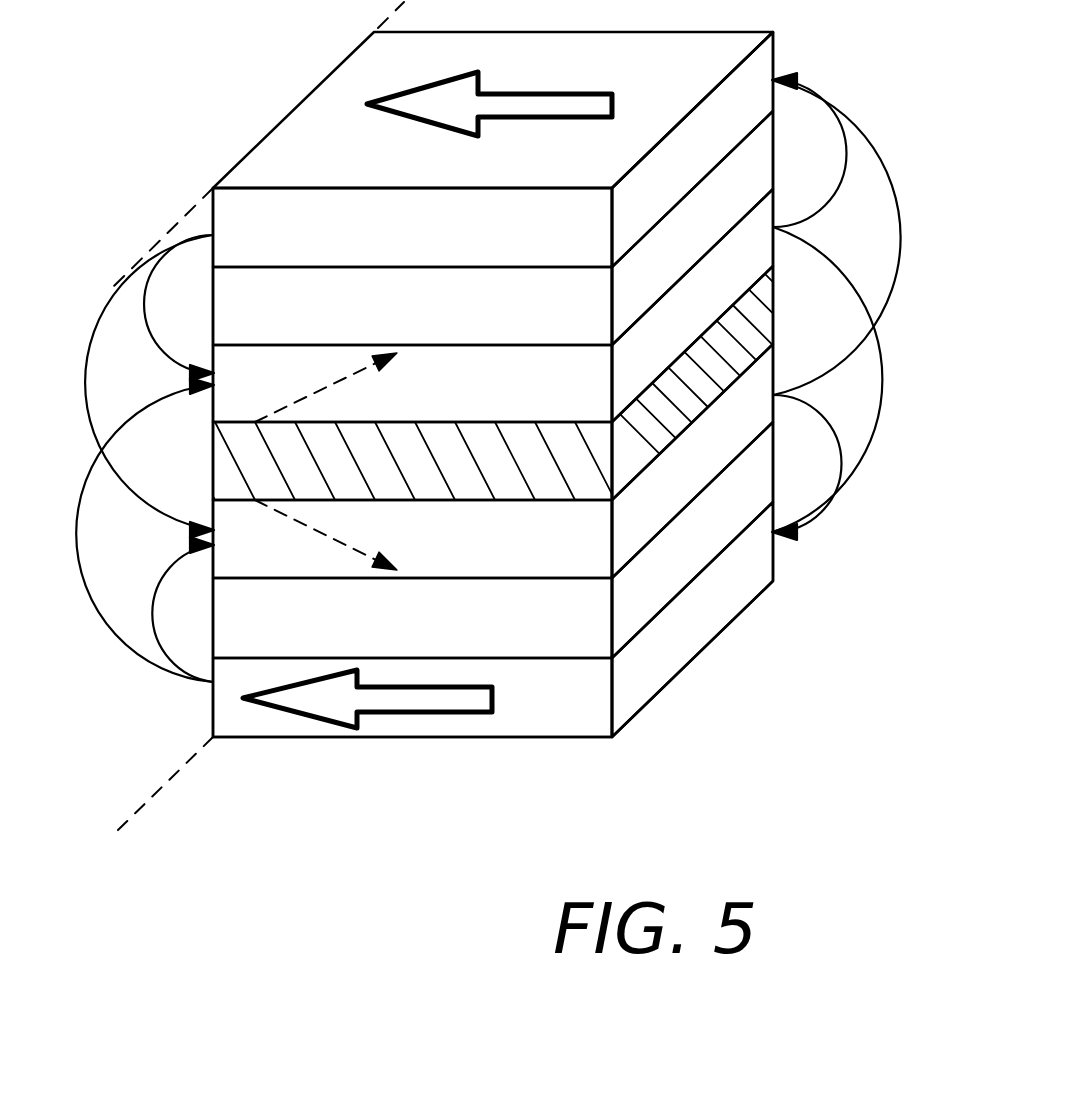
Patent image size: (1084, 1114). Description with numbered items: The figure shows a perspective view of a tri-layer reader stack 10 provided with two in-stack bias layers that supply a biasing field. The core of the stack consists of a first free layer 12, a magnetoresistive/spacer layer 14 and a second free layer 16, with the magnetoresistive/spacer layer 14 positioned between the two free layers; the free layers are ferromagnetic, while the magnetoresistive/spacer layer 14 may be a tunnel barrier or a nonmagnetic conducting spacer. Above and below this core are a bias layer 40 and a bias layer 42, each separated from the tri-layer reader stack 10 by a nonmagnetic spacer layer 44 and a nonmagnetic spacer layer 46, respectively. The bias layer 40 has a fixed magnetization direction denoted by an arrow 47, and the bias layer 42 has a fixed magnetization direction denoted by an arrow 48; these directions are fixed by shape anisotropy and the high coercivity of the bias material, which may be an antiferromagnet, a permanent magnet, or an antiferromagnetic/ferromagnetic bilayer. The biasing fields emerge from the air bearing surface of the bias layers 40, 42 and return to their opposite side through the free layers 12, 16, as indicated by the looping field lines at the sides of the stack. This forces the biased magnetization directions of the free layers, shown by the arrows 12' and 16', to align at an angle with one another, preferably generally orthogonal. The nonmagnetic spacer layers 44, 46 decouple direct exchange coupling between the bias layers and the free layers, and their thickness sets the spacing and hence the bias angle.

The tri-layer reader stack 10 is at (792, 371).
The first free layer 12 is at (493, 305).
The arrow denoting magnetization direction of first free layer 12' is at (357, 387).
The magnetoresistive/spacer layer 14 is at (439, 481).
The second free layer 16 is at (493, 461).
The arrow denoting magnetization direction of second free layer 16' is at (357, 535).
The bias layer 40 is at (440, 242).
The bias layer 42 is at (567, 710).
The nonmagnetic spacer layer 44 is at (440, 315).
The nonmagnetic spacer layer 46 is at (525, 633).
The arrow denoting fixed magnetization direction of bias layer 40 47 is at (545, 92).
The arrow denoting fixed magnetization direction of bias layer 42 48 is at (390, 712).